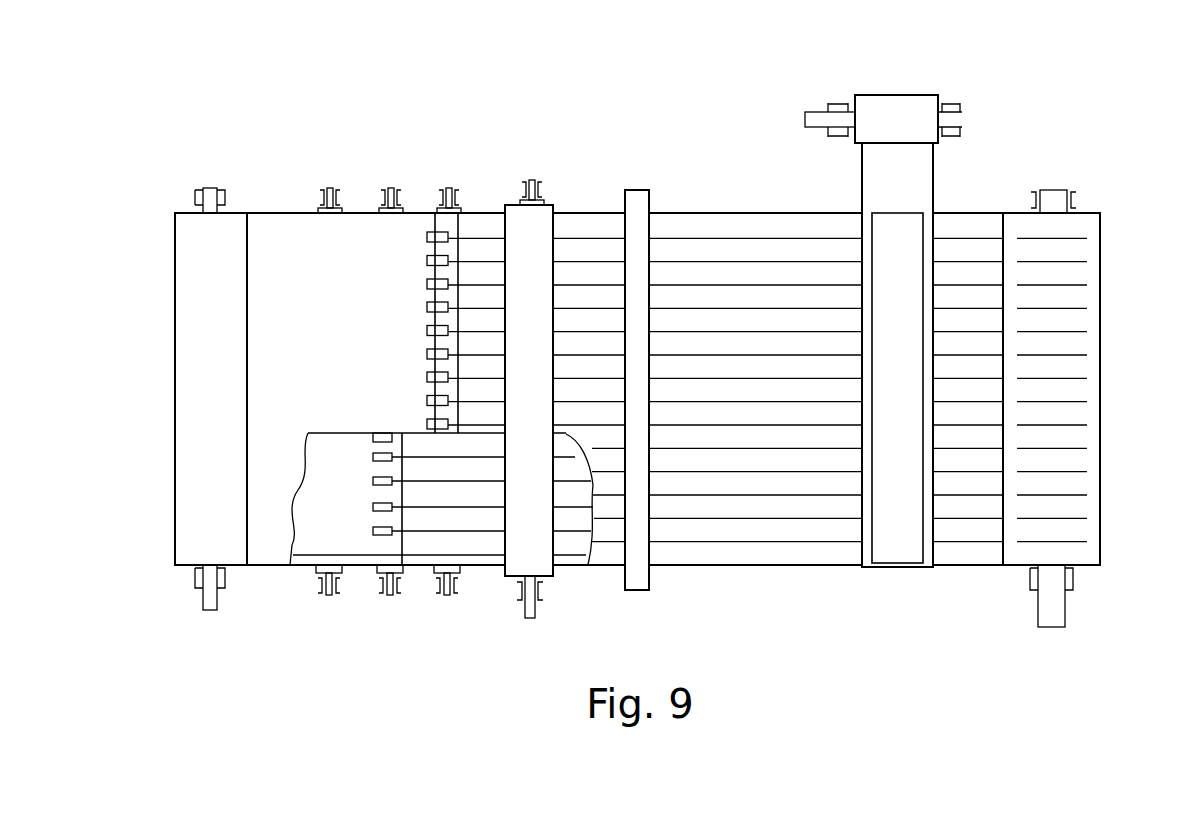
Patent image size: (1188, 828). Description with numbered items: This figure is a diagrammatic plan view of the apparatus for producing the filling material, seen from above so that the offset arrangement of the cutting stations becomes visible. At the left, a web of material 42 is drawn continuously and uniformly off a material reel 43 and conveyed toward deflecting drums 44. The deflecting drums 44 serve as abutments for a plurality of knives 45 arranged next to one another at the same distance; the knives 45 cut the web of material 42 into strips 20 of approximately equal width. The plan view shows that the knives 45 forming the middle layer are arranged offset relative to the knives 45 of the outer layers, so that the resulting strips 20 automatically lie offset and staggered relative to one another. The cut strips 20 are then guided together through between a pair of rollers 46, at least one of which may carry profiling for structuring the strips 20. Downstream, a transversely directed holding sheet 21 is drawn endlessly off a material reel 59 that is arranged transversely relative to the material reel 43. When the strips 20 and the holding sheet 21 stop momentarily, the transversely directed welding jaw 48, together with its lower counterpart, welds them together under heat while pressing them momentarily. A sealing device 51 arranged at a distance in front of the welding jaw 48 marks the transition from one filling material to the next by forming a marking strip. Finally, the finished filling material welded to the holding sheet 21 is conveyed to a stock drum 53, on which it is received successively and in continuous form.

The strips 20 is at (712, 255).
The holding sheet 21 is at (922, 192).
The web of material 42 is at (275, 237).
The material reel 43 is at (185, 313).
The deflecting drum 44 is at (375, 213).
The knives 45 is at (432, 230).
The pair of rollers 46 is at (535, 230).
The welding jaw 48 is at (890, 556).
The sealing device 51 is at (640, 582).
The stock drum 53 is at (1070, 305).
The material reel 59 is at (921, 104).